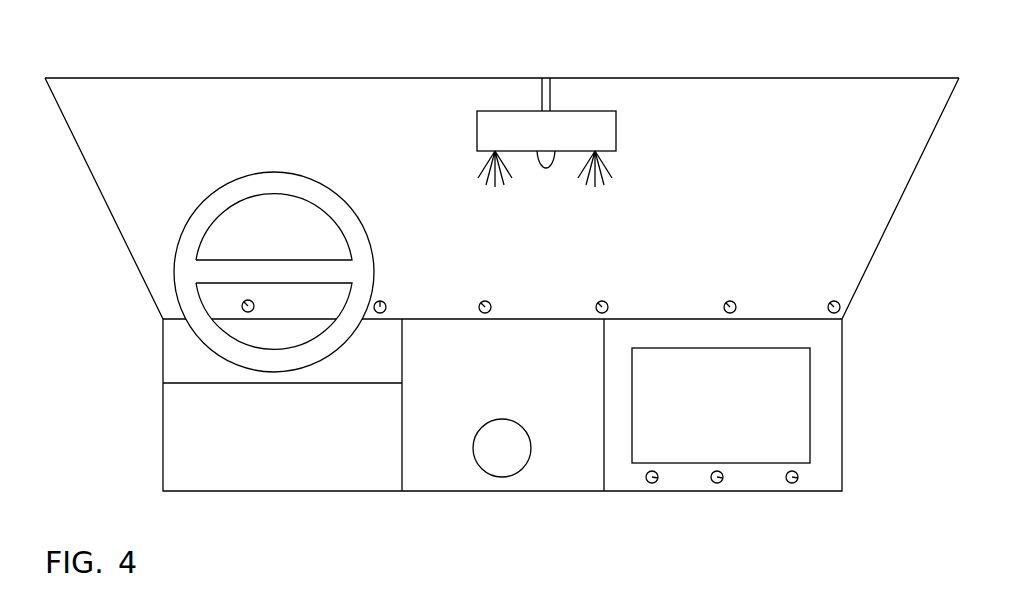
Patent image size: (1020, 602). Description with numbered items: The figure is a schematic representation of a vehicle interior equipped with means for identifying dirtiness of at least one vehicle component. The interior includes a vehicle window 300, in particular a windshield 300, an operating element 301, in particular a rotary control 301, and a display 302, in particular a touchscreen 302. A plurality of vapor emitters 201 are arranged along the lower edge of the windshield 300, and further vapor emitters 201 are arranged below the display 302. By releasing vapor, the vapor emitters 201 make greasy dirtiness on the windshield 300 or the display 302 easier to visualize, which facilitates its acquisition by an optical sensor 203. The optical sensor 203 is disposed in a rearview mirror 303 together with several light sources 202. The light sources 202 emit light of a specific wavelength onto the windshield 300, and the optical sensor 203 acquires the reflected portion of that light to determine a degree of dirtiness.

The vehicle window 300 is at (238, 120).
The operating element 301 is at (481, 427).
The display 302 is at (688, 348).
The rearview mirror 303 is at (565, 141).
The vapor emitter 201 is at (254, 305).
The light source 202 is at (497, 188).
The optical sensor 203 is at (546, 168).